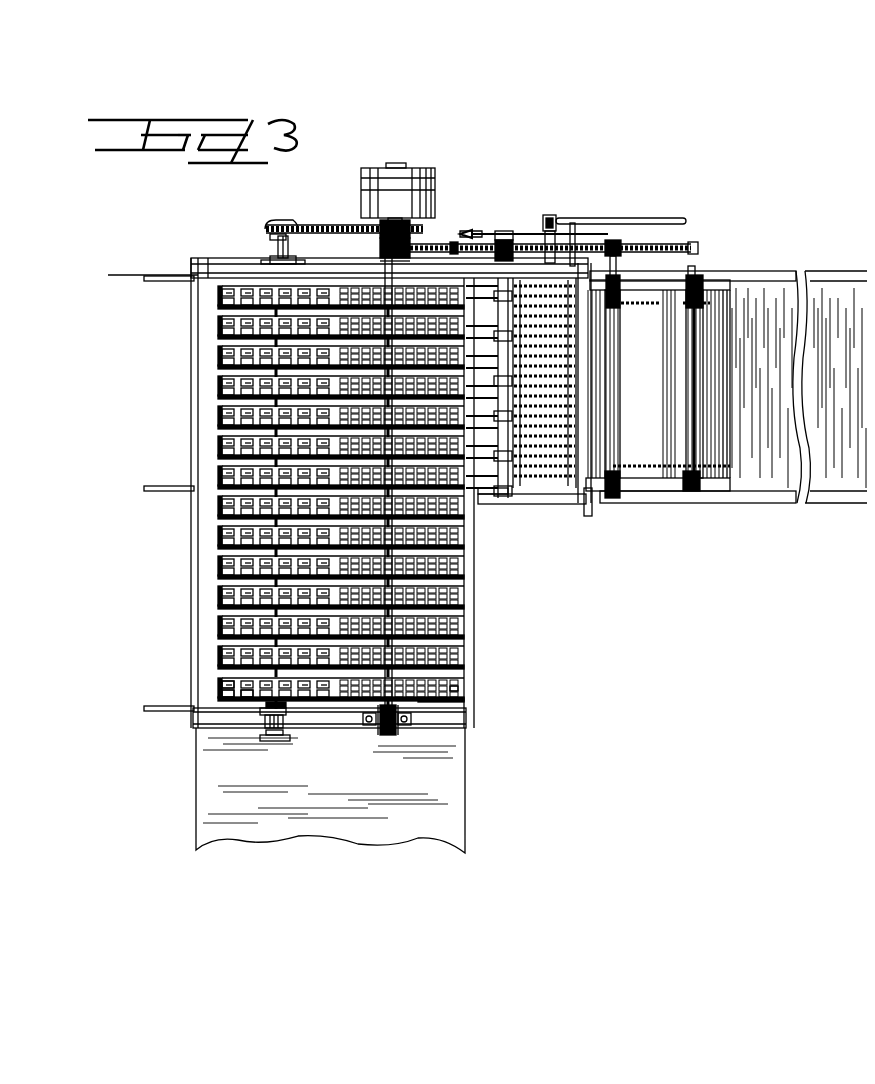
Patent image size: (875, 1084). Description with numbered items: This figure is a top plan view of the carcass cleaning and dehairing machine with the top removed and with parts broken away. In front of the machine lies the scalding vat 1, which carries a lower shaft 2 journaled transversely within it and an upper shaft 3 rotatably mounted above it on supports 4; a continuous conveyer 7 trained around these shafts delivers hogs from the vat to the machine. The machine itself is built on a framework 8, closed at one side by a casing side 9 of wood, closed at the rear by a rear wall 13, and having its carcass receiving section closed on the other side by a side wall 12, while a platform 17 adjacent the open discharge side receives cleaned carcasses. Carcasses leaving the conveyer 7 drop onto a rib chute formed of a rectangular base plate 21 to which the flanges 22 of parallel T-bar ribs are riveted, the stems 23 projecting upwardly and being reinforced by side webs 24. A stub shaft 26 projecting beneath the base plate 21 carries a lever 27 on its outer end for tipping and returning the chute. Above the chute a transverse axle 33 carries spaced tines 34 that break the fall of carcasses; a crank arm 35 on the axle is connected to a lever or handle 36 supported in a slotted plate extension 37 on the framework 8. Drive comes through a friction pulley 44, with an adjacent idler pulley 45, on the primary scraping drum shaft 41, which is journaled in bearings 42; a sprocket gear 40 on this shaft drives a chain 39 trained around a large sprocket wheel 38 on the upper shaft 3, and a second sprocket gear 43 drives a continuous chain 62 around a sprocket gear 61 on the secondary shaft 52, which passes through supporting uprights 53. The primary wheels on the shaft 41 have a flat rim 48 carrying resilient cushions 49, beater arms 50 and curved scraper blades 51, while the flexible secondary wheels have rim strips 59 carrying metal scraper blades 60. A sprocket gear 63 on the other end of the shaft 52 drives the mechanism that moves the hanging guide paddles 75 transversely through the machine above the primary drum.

The scalding vat 1 is at (788, 270).
The lower shaft 2 is at (685, 348).
The upper shaft 3 is at (604, 356).
The supports 4 is at (120, 276).
The continuous conveyer 7 is at (630, 297).
The framework 8 is at (579, 500).
The casing side 9 is at (213, 265).
The side wall 12 is at (524, 480).
The rear wall 13 is at (184, 386).
The platform 17 is at (330, 790).
The base plate 21 is at (588, 495).
The flanges 22 is at (530, 470).
The stems 23 is at (516, 478).
The side webs 24 is at (546, 478).
The stub shaft 26 is at (536, 226).
The lever 27 is at (652, 214).
The transverse axle 33 is at (490, 426).
The tines 34 is at (470, 482).
The crank arm 35 is at (486, 208).
The lever or handle 36 is at (503, 232).
The slotted plate extension 37 is at (624, 243).
The large sprocket wheel 38 is at (690, 240).
The driving chain 39 is at (445, 236).
The sprocket gear 40 is at (372, 240).
The primary scraping drum shaft 41 is at (356, 222).
The bearings 42 is at (386, 727).
The second sprocket gear 43 is at (405, 240).
The friction pulley 44 is at (398, 202).
The idler pulley 45 is at (378, 176).
The rim 48 is at (406, 693).
The resilient cushions 49 is at (458, 692).
The beater arms 50 is at (440, 672).
The scraper blades 51 is at (450, 685).
The shaft 52 is at (268, 240).
The supporting braces or uprights 53 is at (285, 703).
The flexible rim strips 59 is at (240, 694).
The metal scraper blades 60 is at (214, 687).
The sprocket gear 61 is at (262, 222).
The continuous chain 62 is at (300, 216).
The sprocket gear 63 is at (268, 733).
The guide paddles 75 is at (142, 278).